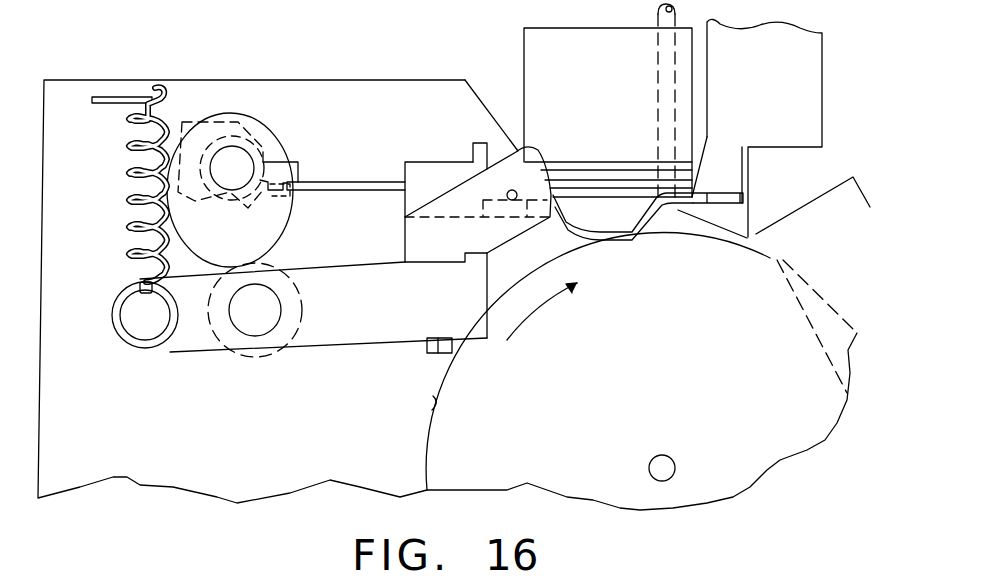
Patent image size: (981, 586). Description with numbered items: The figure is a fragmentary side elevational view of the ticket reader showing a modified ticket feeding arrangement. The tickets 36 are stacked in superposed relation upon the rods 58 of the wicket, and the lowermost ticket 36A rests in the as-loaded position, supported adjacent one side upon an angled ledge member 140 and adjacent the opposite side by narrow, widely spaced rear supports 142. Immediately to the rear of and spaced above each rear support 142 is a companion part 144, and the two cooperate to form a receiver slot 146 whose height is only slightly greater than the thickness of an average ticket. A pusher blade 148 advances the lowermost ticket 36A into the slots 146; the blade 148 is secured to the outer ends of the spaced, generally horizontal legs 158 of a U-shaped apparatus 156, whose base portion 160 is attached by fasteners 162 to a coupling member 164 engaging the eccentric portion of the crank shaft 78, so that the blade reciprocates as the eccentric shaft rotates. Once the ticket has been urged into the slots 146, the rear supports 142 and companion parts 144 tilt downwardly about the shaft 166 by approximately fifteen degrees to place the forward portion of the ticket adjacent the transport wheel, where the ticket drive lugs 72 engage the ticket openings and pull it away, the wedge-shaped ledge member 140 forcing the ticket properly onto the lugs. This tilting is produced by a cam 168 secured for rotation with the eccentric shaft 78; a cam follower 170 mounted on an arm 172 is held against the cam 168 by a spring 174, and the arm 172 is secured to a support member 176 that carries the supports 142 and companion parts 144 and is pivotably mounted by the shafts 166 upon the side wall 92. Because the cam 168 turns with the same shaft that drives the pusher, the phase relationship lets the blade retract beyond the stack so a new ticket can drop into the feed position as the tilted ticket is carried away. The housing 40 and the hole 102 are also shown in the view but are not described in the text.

The tickets 36 is at (610, 163).
The lowermost ticket 36A is at (578, 202).
The housing 40 is at (808, 84).
The rods 58 is at (663, 23).
The ticket drive lugs 72 is at (437, 403).
The crank shaft 78 is at (252, 135).
The side wall 92 is at (263, 457).
The hole 102 is at (676, 463).
The angled ledge member 140 is at (740, 229).
The rear supports 142 is at (527, 218).
The companion part 144 is at (480, 152).
The receiver slot 146 is at (483, 217).
The pusher blade 148 is at (703, 207).
The U-shaped apparatus 156 is at (368, 187).
The legs 158 is at (705, 193).
The base portion 160 is at (310, 182).
The fasteners 162 is at (286, 193).
The coupling member 164 is at (207, 118).
The shaft 166 is at (520, 178).
The cam 168 is at (237, 242).
The cam follower 170 is at (268, 346).
The arm 172 is at (162, 348).
The spring 174 is at (128, 191).
The support member 176 is at (416, 239).